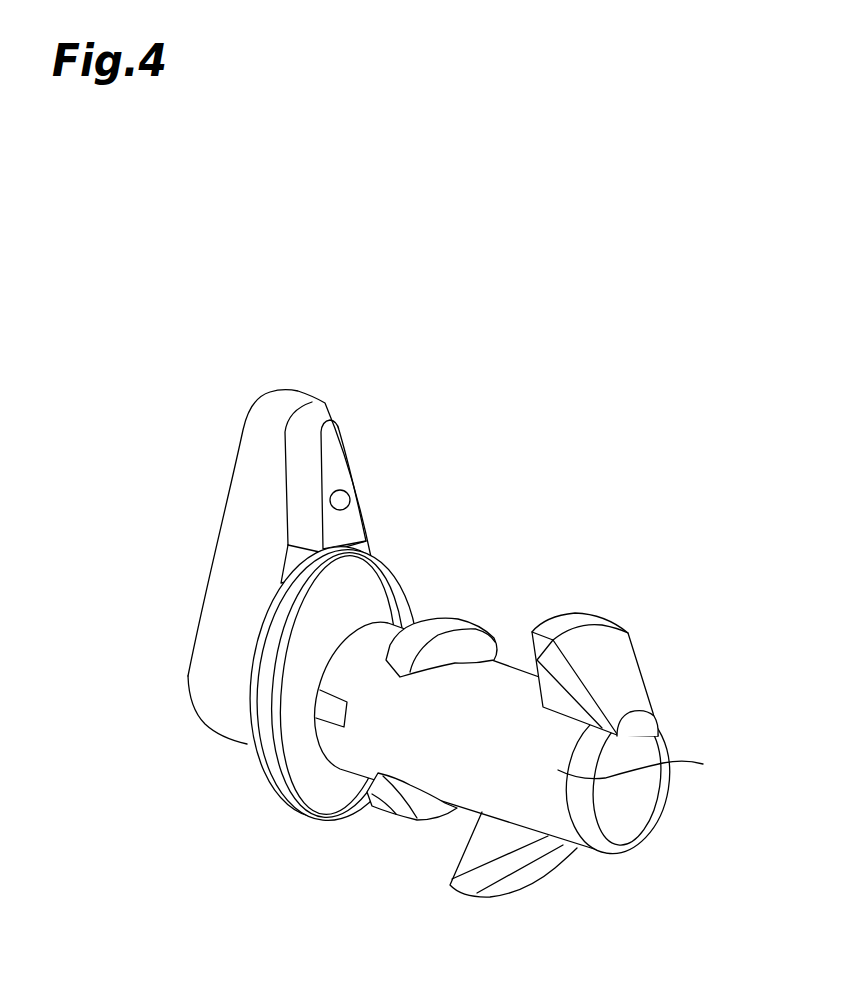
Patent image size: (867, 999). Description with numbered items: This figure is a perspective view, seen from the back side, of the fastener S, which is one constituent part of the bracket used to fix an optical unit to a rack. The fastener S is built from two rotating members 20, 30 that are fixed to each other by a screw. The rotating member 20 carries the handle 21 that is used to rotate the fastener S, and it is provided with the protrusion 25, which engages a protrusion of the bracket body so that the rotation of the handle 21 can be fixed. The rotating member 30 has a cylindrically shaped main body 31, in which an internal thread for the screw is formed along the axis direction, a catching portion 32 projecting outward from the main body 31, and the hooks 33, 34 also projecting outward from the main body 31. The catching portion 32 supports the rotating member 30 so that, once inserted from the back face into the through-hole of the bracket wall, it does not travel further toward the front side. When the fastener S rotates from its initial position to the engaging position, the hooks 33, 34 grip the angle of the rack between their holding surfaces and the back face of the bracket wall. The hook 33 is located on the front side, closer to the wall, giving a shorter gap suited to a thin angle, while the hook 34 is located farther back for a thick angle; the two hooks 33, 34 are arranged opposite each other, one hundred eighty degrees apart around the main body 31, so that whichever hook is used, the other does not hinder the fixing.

The fastener S is at (557, 411).
The rotating member 20 is at (319, 401).
The handle 21 is at (260, 479).
The protrusion 25 is at (348, 492).
The rotating member 30 is at (657, 824).
The main body 31 is at (647, 766).
The catching portion 32 is at (440, 618).
The hook 33 is at (520, 882).
The hook 34 is at (592, 640).